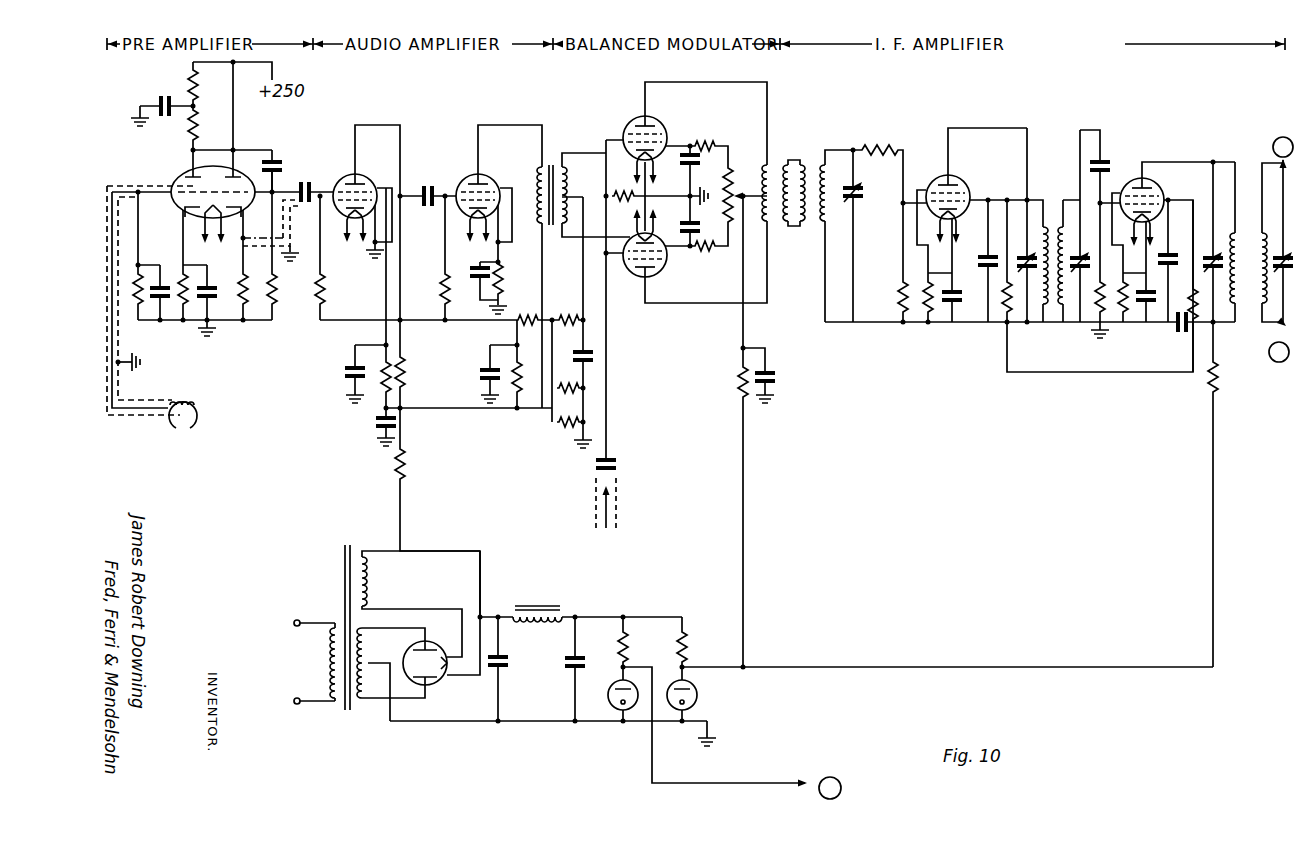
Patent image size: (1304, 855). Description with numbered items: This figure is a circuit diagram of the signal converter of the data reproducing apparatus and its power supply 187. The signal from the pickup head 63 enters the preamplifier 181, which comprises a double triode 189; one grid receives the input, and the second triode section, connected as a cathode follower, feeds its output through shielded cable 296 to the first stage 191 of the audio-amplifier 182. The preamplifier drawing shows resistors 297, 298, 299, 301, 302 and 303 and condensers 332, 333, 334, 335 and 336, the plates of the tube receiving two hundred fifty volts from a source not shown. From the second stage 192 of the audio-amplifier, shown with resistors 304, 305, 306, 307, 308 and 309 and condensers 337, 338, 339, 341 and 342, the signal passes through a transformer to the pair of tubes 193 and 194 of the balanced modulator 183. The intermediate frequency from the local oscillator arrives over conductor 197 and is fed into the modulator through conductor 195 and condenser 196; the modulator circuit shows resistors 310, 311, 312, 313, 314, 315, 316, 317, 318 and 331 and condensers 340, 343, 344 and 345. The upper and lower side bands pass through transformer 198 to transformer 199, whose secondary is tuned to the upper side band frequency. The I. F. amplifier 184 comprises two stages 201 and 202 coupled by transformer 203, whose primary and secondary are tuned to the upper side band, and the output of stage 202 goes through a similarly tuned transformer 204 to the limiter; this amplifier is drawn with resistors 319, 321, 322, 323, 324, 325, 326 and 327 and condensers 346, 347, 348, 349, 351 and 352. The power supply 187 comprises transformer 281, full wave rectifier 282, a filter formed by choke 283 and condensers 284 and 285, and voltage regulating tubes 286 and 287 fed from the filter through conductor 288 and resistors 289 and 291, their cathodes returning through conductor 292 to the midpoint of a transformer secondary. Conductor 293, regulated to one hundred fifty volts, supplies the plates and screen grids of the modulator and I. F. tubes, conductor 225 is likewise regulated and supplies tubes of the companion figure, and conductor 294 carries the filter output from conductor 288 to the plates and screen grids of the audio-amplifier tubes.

The pickup head 63 is at (200, 418).
The preamplifier 181 is at (165, 83).
The audio-amplifier 182 is at (427, 83).
The balanced modulator 183 is at (637, 83).
The I. F. amplifier 184 is at (992, 83).
The power supply 187 is at (500, 753).
The double triode 189 is at (192, 172).
The first stage of the audio-amplifier 191 is at (345, 175).
The second stage of the audio-amplifier 192 is at (470, 174).
The balanced modulator tube 193 is at (633, 120).
The balanced modulator tube 194 is at (660, 280).
The conductor 195 is at (608, 418).
The condenser 196 is at (612, 466).
The conductor 197 is at (600, 495).
The transformer 198 is at (775, 155).
The transformer 199 is at (814, 160).
The first I. F. amplifier stage 201 is at (955, 177).
The second I. F. amplifier stage 202 is at (1159, 192).
The transformer 203 is at (1050, 197).
The transformer 204 is at (1248, 172).
The conductor 225 is at (760, 782).
The transformer 281 is at (345, 583).
The full wave rectifier 282 is at (446, 680).
The choke 283 is at (540, 605).
The condenser 284 is at (504, 662).
The condenser 285 is at (570, 670).
The voltage regulating tube 286 is at (613, 691).
The voltage regulating tube 287 is at (698, 696).
The conductor 288 is at (637, 615).
The resistor 289 is at (628, 648).
The resistor 291 is at (688, 642).
The conductor 292 is at (598, 723).
The conductor 293 is at (730, 668).
The conductor 294 is at (412, 540).
The shielded cable 296 is at (281, 258).
The resistor 297 is at (197, 83).
The resistor 298 is at (197, 122).
The resistor 299 is at (139, 306).
The resistor 301 is at (183, 270).
The resistor 302 is at (243, 306).
The resistor 303 is at (273, 304).
The resistor 304 is at (326, 288).
The resistor 305 is at (383, 392).
The resistor 306 is at (404, 372).
The resistor 307 is at (405, 467).
The resistor 308 is at (443, 290).
The resistor 309 is at (495, 285).
The resistor 310 is at (528, 315).
The resistor 311 is at (517, 394).
The resistor 312 is at (576, 318).
The resistor 313 is at (586, 387).
The resistor 314 is at (562, 425).
The resistor 315 is at (610, 195).
The resistor 316 is at (705, 144).
The resistor 317 is at (705, 250).
The resistor 318 is at (741, 374).
The resistor 319 is at (880, 146).
The resistor 321 is at (900, 296).
The resistor 322 is at (926, 314).
The resistor 323 is at (1004, 314).
The resistor 324 is at (1098, 305).
The resistor 325 is at (1122, 314).
The resistor 326 is at (1196, 300).
The resistor 327 is at (1218, 380).
The resistor 331 is at (732, 178).
The condenser 332 is at (165, 100).
The condenser 333 is at (160, 300).
The condenser 334 is at (207, 284).
The condenser 335 is at (274, 160).
The condenser 336 is at (303, 185).
The condenser 337 is at (353, 372).
The condenser 338 is at (382, 426).
The condenser 339 is at (490, 368).
The condenser 340 is at (686, 168).
The condenser 341 is at (479, 278).
The condenser 342 is at (427, 185).
The condenser 343 is at (588, 350).
The condenser 344 is at (687, 221).
The condenser 345 is at (770, 388).
The condenser 346 is at (956, 294).
The condenser 347 is at (984, 261).
The condenser 348 is at (1104, 160).
The condenser 349 is at (1147, 290).
The condenser 351 is at (1180, 333).
The condenser 352 is at (1169, 253).